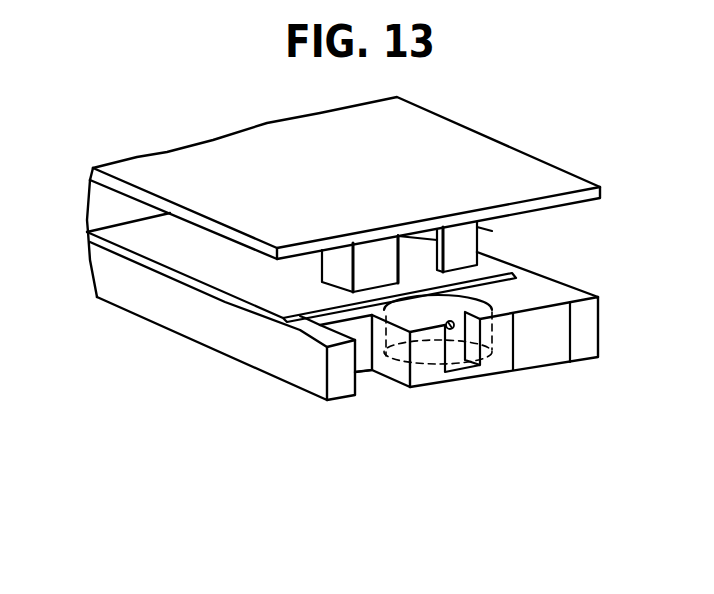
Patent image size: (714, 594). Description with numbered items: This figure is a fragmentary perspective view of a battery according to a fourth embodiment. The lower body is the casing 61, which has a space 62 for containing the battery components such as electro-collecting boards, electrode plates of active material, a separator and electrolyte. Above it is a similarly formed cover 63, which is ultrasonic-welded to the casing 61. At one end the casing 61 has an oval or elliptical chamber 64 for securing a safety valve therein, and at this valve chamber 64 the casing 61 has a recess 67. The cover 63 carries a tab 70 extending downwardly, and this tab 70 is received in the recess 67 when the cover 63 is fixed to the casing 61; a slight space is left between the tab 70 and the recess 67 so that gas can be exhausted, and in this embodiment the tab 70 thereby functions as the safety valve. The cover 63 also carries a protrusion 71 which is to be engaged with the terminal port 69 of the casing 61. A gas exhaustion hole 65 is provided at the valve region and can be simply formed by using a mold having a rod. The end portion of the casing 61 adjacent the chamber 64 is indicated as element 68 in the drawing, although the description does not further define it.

The casing 61 is at (230, 343).
The space 62 is at (212, 265).
The cover 63 is at (470, 142).
The chamber 64 is at (478, 302).
The gas exhaustion hole 65 is at (449, 330).
The recess 67 is at (470, 352).
The end piece 68 is at (552, 348).
The terminal port 69 is at (368, 378).
The tab 70 is at (470, 241).
The protrusion 71 is at (363, 257).